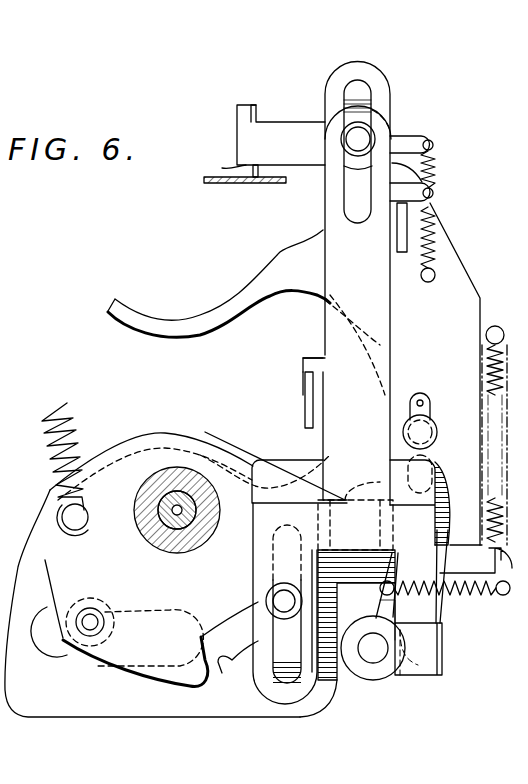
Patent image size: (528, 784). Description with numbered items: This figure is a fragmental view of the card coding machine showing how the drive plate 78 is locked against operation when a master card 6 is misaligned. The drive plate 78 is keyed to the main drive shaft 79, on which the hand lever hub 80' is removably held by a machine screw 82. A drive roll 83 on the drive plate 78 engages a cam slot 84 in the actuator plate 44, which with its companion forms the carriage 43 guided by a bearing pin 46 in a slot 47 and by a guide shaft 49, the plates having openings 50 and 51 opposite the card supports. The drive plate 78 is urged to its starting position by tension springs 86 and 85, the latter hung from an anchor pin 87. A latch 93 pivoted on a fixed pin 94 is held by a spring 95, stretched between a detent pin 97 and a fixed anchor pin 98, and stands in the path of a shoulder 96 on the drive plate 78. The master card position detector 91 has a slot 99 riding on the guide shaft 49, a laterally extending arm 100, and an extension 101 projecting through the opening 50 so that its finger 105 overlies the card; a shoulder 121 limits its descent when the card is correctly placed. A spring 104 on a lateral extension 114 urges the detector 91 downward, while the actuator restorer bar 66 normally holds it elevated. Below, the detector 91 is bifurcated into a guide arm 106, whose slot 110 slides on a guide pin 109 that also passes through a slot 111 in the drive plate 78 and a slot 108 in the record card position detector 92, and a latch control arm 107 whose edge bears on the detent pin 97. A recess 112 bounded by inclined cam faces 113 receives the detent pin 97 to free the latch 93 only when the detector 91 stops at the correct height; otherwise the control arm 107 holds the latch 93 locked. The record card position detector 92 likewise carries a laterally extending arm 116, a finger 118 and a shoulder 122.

The coded master card 6 is at (228, 184).
The carriage 43 is at (474, 283).
The actuator plate 44 is at (436, 433).
The bearing pin 46 is at (422, 432).
The slot 47 is at (416, 400).
The guide shaft 49 is at (360, 139).
The opening 50 is at (178, 326).
The opening 51 is at (288, 297).
The actuator restorer bar 66 is at (405, 223).
The drive plate 78 is at (122, 672).
The main drive shaft 79 is at (196, 507).
The hub 80' is at (177, 483).
The machine screw 82 is at (172, 511).
The drive roll 83 is at (118, 622).
The cam slot 84 is at (57, 657).
The tension spring 85 is at (48, 416).
The tension spring 86 is at (487, 373).
The anchor pin 87 is at (79, 525).
The master card position detector 91 is at (385, 88).
The record card position detector 92 is at (357, 328).
The latch 93 is at (442, 472).
The fixed pin 94 is at (373, 652).
The spring 95 is at (467, 596).
The shoulder 96 is at (366, 500).
The detent pin 97 is at (370, 566).
The fixed anchor pin 98 is at (503, 596).
The slot 99 is at (357, 82).
The laterally extending arm 100 is at (285, 130).
The extension 101 is at (242, 105).
The spring 104 is at (438, 166).
The finger 105 is at (257, 170).
The guide arm 106 is at (280, 462).
The latch control arm 107 is at (376, 505).
The slot 108 is at (258, 566).
The guide pin 109 is at (283, 600).
The slot 110 is at (262, 557).
The slot 111 is at (237, 677).
The recess 112 is at (392, 580).
The inclined cam face 113 is at (395, 600).
The lateral extension 114 is at (432, 145).
The laterally extending arm 116 is at (303, 364).
The finger 118 is at (305, 414).
The shoulder 121 is at (221, 159).
The shoulder 122 is at (303, 390).